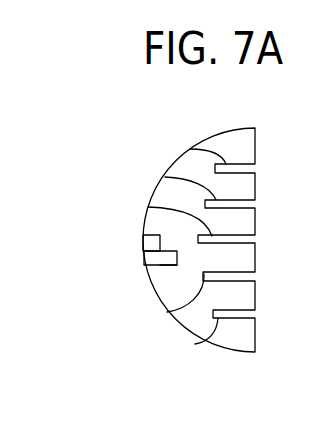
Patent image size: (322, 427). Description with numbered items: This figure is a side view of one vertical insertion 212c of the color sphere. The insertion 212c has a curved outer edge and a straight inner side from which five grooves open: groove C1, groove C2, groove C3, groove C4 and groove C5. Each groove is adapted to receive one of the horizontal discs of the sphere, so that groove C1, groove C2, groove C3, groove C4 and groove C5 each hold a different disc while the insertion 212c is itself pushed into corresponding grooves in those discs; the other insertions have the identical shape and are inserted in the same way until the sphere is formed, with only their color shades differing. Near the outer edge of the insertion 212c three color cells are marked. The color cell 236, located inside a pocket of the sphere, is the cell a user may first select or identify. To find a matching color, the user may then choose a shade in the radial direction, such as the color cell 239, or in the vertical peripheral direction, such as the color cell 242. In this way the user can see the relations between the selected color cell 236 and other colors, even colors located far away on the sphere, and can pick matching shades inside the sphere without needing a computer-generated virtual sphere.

The insertion 212c is at (215, 123).
The groove C1 is at (190, 149).
The groove C2 is at (165, 177).
The groove C3 is at (148, 207).
The groove C4 is at (167, 312).
The groove C5 is at (195, 344).
The color cell 242 is at (150, 242).
The color cell 236 is at (150, 257).
The color cell 239 is at (168, 264).